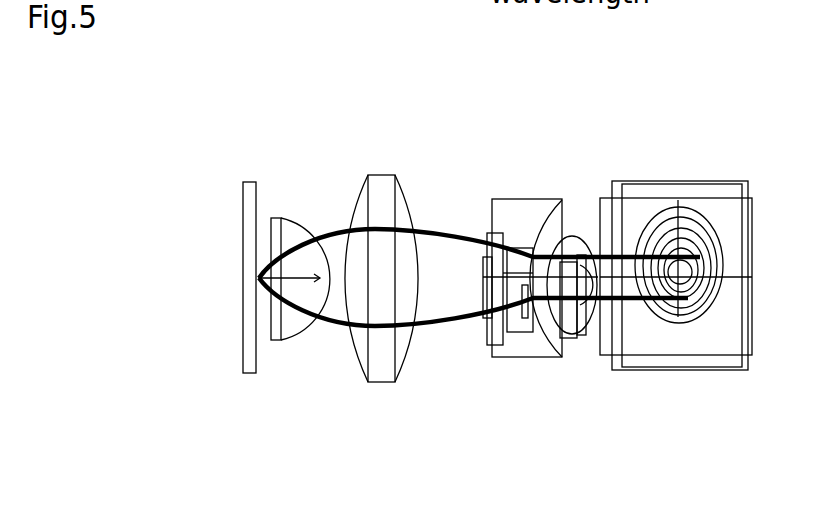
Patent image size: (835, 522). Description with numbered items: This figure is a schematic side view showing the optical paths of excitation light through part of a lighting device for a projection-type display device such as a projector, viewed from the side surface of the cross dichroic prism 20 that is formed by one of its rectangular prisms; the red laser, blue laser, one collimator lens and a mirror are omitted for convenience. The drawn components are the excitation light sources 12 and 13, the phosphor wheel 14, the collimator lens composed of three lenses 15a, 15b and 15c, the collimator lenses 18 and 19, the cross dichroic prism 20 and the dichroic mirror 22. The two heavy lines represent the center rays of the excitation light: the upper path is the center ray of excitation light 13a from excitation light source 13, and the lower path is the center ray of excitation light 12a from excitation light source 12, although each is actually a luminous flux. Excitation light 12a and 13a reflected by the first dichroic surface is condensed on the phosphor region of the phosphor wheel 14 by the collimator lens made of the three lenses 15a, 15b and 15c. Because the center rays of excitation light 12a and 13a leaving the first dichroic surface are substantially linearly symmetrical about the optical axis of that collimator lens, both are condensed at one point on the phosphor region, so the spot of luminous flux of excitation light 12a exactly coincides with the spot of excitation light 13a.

The excitation light source 12 is at (483, 347).
The excitation light 12a is at (710, 303).
The excitation light source 13 is at (488, 232).
The excitation light 13a is at (708, 222).
The phosphor wheel 14 is at (256, 182).
The lens 15a is at (270, 342).
The lens 15b is at (373, 382).
The lens 15c is at (523, 357).
The collimator lens 18 is at (577, 350).
The collimator lens 19 is at (583, 230).
The cross dichroic prism 20 is at (600, 207).
The dichroic mirror 22 is at (683, 181).